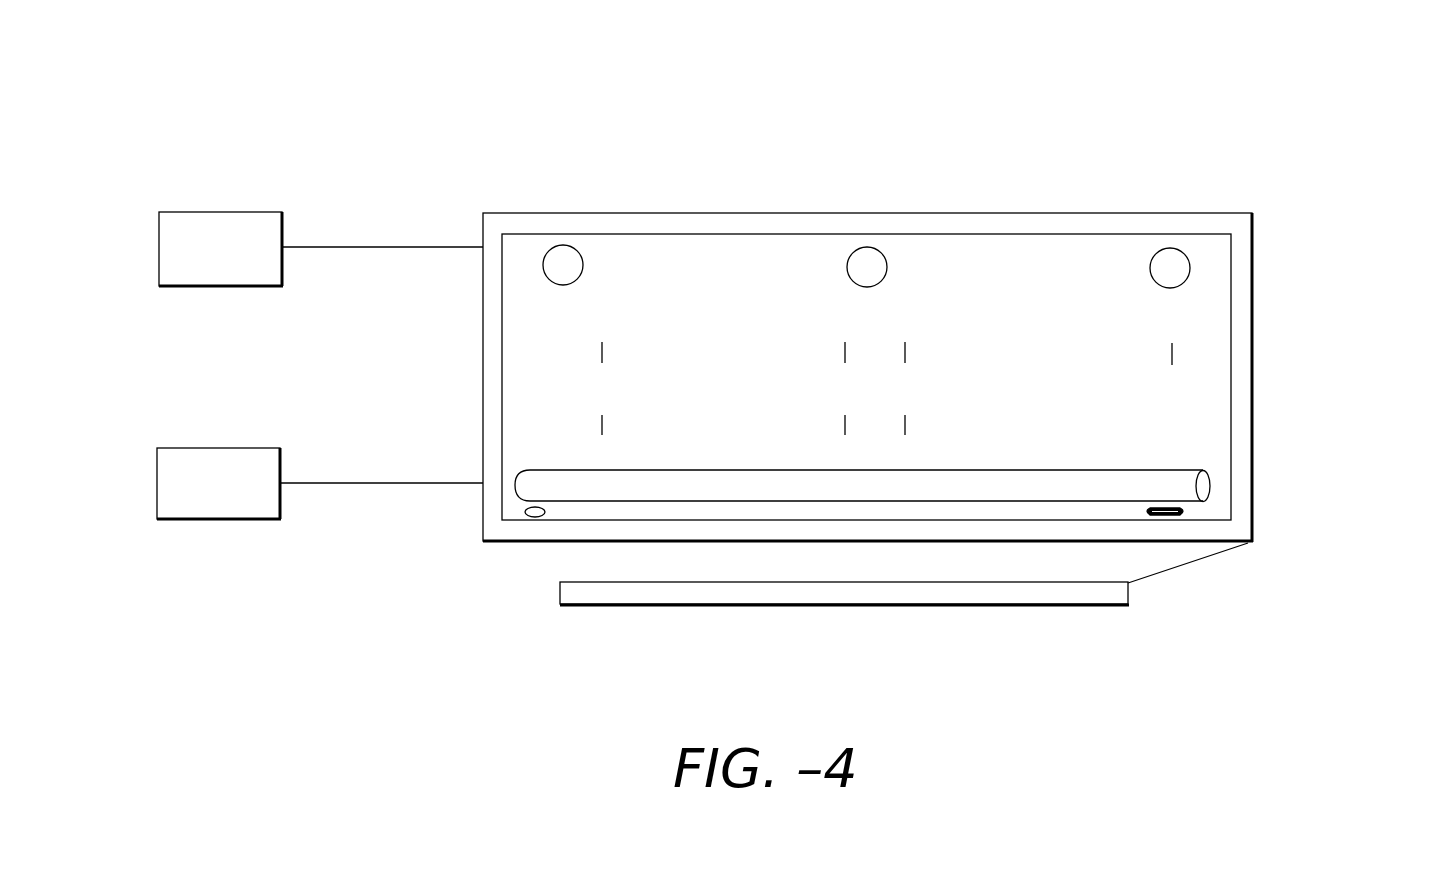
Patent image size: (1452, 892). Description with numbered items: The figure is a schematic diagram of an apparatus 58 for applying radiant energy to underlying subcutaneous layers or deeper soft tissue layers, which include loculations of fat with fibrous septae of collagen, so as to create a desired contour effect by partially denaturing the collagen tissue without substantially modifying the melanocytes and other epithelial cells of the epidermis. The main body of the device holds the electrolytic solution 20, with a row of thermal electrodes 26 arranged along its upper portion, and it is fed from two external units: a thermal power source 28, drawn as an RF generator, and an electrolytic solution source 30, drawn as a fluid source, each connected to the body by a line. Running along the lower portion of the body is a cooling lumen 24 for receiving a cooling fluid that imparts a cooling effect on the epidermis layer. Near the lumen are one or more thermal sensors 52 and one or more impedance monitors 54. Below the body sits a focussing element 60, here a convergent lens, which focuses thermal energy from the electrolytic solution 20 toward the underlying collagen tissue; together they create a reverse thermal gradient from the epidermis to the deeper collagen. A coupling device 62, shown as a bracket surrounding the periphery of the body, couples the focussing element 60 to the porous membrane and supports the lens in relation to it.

The thermal power source 28 is at (225, 212).
The electrolytic solution source 30 is at (223, 519).
The coupling device 62 is at (1240, 252).
The electrolytic solution 20 is at (1172, 355).
The thermal electrodes 26 is at (563, 255).
The lumen 24 is at (1210, 487).
The thermal sensors 52 is at (533, 517).
The impedance monitors 54 is at (1182, 513).
The focussing element 60 is at (1005, 607).
The apparatus 58 is at (398, 632).